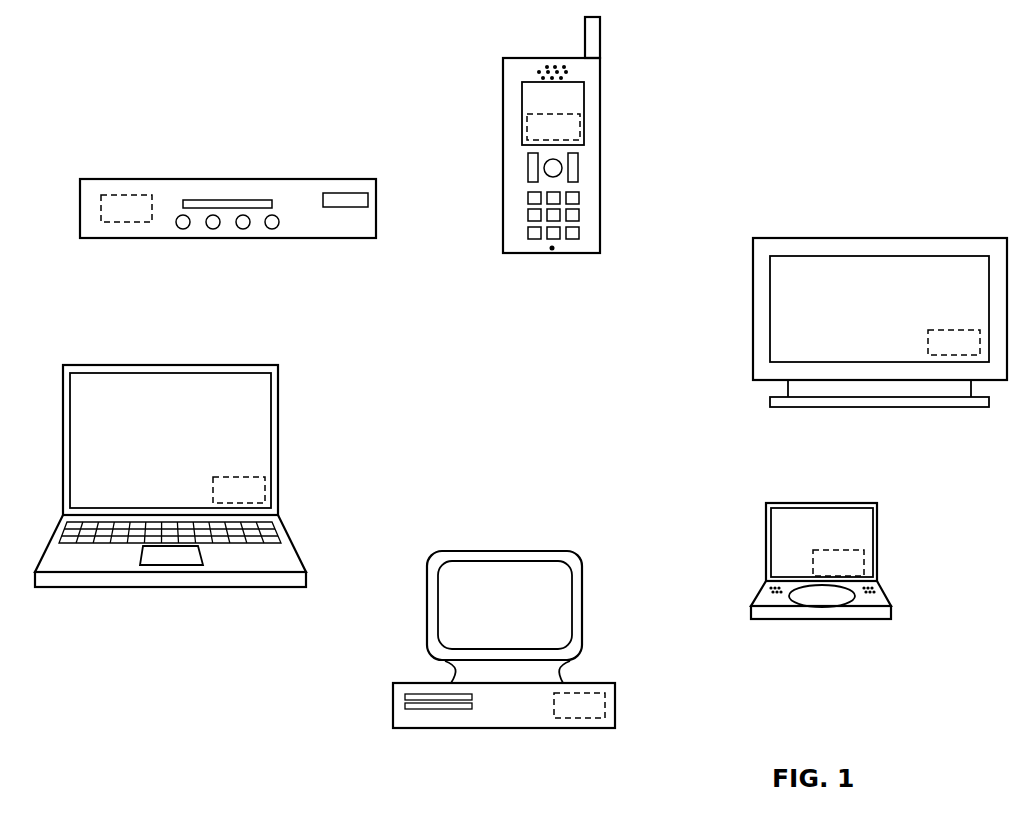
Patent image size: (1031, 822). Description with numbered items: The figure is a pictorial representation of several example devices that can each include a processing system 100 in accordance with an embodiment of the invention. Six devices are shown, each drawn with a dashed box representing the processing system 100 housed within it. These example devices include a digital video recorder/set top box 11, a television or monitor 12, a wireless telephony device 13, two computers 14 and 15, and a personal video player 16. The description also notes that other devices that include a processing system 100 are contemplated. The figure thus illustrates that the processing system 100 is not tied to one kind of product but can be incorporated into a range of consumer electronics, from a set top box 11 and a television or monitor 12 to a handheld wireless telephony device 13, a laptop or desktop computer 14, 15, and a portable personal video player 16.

The digital video recorder/set top box 11 is at (357, 231).
The television or monitor 12 is at (802, 277).
The wireless telephony device 13 is at (528, 78).
The computer 14 is at (120, 413).
The computer 15 is at (476, 598).
The personal video player 16 is at (803, 537).
The processing system 100 is at (540, 416).